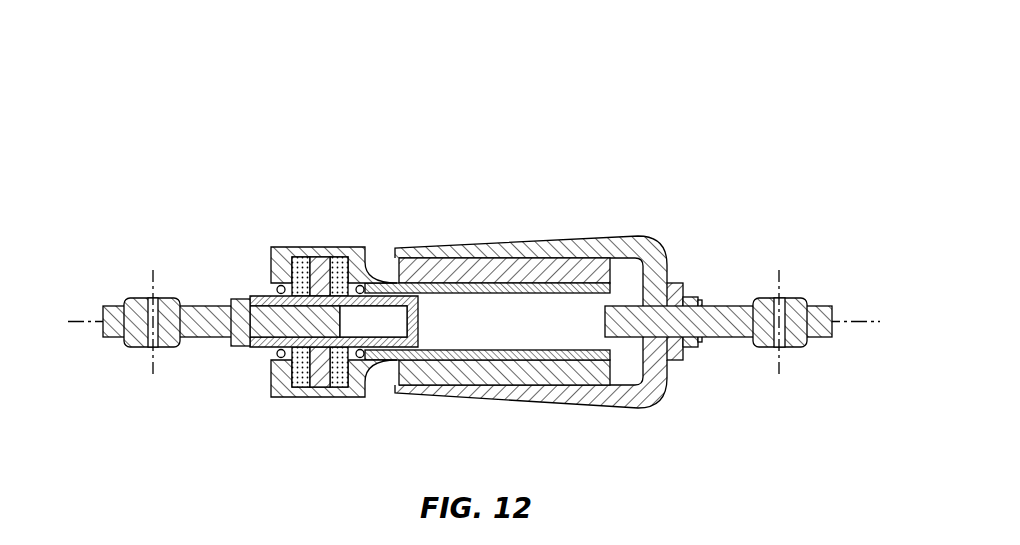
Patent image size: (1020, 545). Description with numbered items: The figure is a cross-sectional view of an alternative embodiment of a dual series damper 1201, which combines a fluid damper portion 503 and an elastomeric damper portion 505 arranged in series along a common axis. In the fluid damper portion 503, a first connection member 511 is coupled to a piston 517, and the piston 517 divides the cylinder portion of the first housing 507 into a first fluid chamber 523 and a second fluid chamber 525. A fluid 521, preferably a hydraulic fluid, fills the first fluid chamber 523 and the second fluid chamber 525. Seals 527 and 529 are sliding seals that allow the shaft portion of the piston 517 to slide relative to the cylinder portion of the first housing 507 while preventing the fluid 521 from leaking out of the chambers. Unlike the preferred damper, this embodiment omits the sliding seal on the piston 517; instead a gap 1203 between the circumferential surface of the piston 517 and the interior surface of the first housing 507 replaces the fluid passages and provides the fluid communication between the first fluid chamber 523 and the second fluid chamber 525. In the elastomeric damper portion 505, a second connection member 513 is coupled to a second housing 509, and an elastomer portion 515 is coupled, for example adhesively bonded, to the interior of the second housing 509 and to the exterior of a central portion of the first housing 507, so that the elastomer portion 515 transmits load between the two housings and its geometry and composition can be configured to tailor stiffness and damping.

The dual series damper 1201 is at (291, 261).
The gap 1203 is at (305, 378).
The fluid damper portion 503 is at (291, 303).
The elastomeric damper portion 505 is at (555, 303).
The first housing 507 is at (290, 248).
The second housing 509 is at (605, 408).
The first connection member 511 is at (118, 307).
The second connection member 513 is at (795, 297).
The elastomer portion 515 is at (585, 258).
The piston 517 is at (338, 375).
The fluid 521 is at (351, 260).
The first fluid chamber 523 is at (283, 368).
The second fluid chamber 525 is at (352, 390).
The seal 527 is at (272, 285).
The seal 529 is at (372, 268).